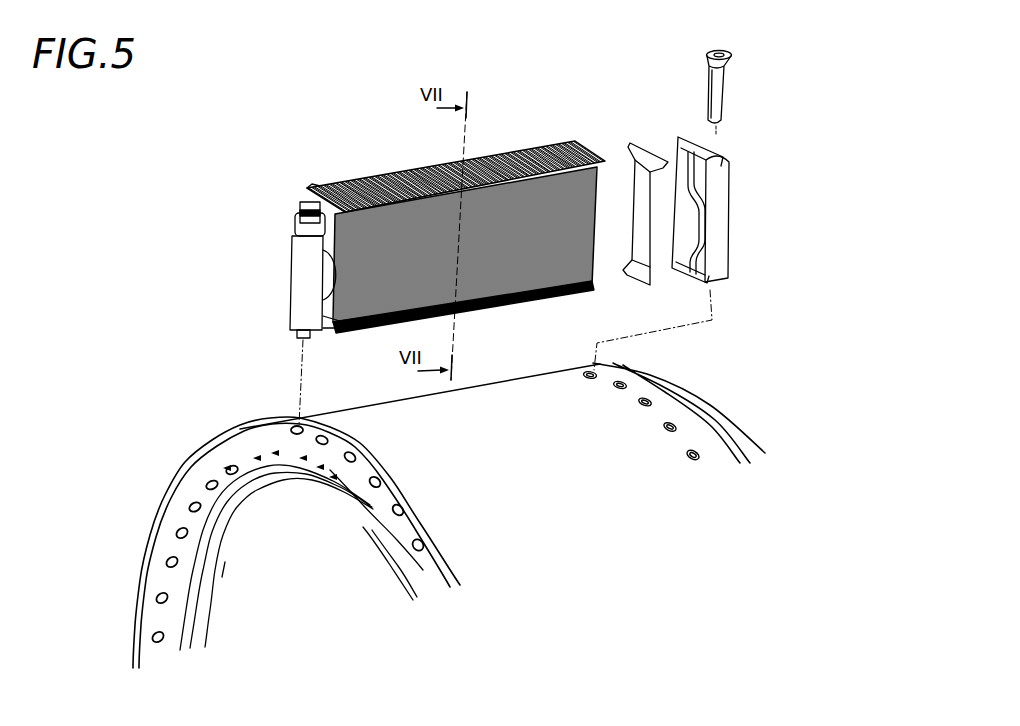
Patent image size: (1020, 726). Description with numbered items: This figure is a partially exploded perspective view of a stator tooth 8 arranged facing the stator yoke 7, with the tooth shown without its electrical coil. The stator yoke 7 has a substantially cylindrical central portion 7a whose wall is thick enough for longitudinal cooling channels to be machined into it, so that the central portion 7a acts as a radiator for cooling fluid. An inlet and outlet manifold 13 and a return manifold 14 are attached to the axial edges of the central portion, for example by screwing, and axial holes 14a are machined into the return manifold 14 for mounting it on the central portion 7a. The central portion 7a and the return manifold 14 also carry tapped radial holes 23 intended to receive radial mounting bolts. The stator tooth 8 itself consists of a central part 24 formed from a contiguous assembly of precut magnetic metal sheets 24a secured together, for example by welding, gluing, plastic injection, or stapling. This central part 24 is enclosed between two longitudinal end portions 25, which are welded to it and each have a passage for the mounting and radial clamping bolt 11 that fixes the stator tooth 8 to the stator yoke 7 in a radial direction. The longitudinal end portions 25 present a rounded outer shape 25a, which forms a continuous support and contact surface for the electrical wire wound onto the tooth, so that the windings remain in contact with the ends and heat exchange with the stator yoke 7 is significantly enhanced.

The stator yoke 7 is at (463, 494).
The central portion 7a is at (512, 466).
The stator tooth 8 is at (456, 209).
The mounting and radial clamping bolt 11 is at (722, 104).
The inlet and outlet manifold 13 is at (772, 437).
The return manifold 14 is at (229, 526).
The axial holes 14a is at (167, 562).
The tapped radial holes 23 is at (292, 425).
The central part 24 is at (388, 166).
The precut magnetic metal sheets 24a is at (640, 130).
The longitudinal end portions 25 is at (502, 237).
The rounded outer shape 25a is at (292, 300).